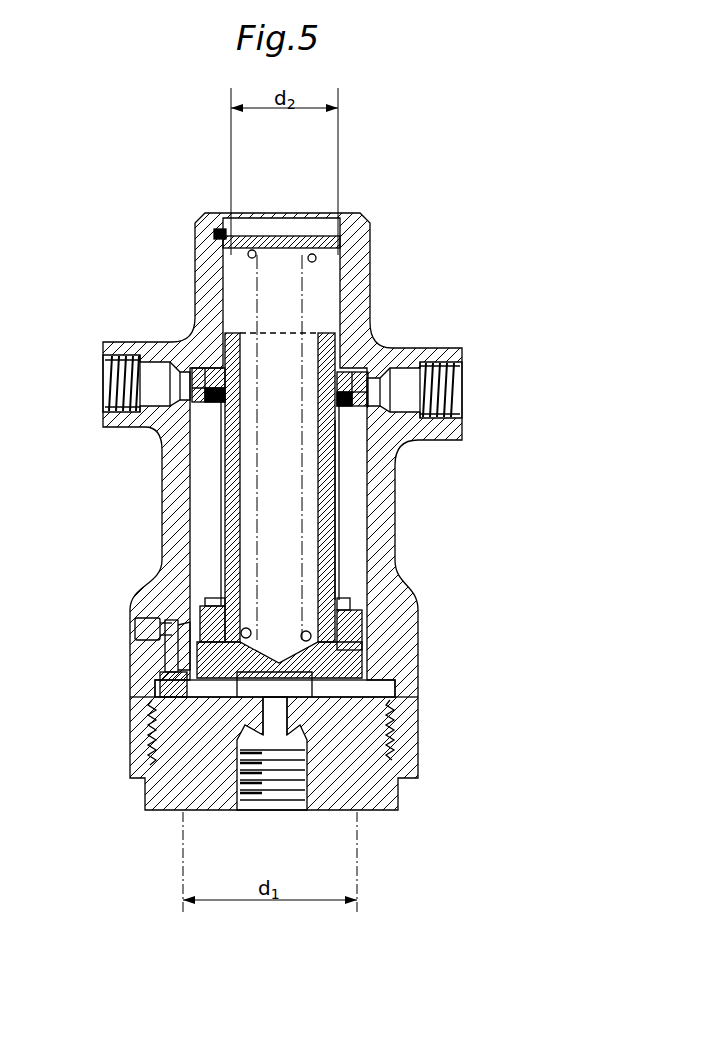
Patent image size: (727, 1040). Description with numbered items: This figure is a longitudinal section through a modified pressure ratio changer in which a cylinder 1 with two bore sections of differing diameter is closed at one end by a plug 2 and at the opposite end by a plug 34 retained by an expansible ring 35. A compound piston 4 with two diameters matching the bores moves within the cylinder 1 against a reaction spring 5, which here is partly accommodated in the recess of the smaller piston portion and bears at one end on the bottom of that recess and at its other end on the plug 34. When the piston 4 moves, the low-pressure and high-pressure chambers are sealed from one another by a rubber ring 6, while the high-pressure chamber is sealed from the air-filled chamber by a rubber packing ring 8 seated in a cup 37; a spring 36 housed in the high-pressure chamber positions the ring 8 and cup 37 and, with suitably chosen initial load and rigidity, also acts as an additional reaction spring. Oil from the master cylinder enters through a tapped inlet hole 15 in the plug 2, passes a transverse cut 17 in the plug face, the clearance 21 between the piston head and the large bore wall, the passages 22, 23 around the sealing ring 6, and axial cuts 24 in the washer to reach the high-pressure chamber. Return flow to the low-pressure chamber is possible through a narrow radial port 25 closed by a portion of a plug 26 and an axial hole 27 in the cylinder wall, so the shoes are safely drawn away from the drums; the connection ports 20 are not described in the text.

The cylinder 1 is at (357, 257).
The plug 2 is at (362, 734).
The compound piston 4 is at (335, 530).
The reaction spring 5 is at (245, 464).
The rubber ring 6 is at (355, 628).
The rubber packing ring 8 is at (352, 372).
The tapped inlet hole 15 is at (287, 770).
The transverse cut 17 is at (312, 686).
The connection port 20 is at (122, 385).
The clearance 21 is at (185, 688).
The passage 22 is at (200, 682).
The passage 23 is at (190, 623).
The axial cut 24 is at (197, 612).
The narrow radial port 25 is at (165, 648).
The plug 26 is at (140, 630).
The axial hole 27 is at (170, 665).
The plug 34 is at (226, 241).
The expansible ring 35 is at (215, 233).
The spring 36 is at (338, 492).
The cup 37 is at (362, 378).